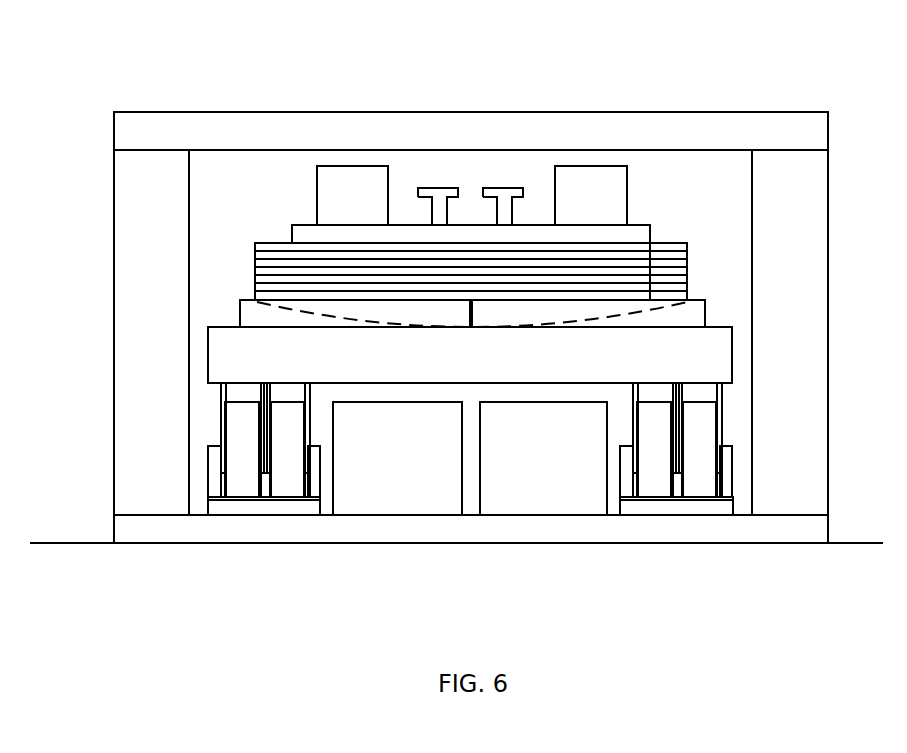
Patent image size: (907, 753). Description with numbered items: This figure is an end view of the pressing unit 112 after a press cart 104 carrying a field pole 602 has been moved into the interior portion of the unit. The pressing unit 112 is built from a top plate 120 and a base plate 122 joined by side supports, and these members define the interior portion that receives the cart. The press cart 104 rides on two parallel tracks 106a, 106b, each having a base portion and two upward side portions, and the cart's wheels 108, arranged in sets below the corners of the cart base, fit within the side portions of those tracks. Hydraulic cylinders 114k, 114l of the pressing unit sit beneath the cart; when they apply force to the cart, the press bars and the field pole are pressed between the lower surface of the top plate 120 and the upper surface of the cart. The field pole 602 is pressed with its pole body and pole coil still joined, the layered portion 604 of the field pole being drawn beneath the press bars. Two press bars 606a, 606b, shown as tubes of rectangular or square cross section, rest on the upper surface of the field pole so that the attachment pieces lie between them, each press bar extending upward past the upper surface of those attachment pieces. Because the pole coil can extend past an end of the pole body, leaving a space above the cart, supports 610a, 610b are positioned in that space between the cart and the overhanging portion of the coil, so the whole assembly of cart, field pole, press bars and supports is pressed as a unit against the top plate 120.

The press cart 104 is at (206, 357).
The parallel track 106a is at (736, 505).
The parallel track 106b is at (206, 507).
The wheels 108 is at (243, 430).
The pressing unit 112 is at (413, 110).
The hydraulic cylinder 114k is at (372, 490).
The hydraulic cylinder 114l is at (548, 490).
The top plate 120 is at (812, 137).
The base plate 122 is at (460, 527).
The field pole 602 is at (640, 219).
The layer stack 604 is at (690, 272).
The press bar 606a is at (590, 162).
The press bar 606b is at (338, 162).
The support 610a is at (238, 313).
The support 610b is at (710, 315).